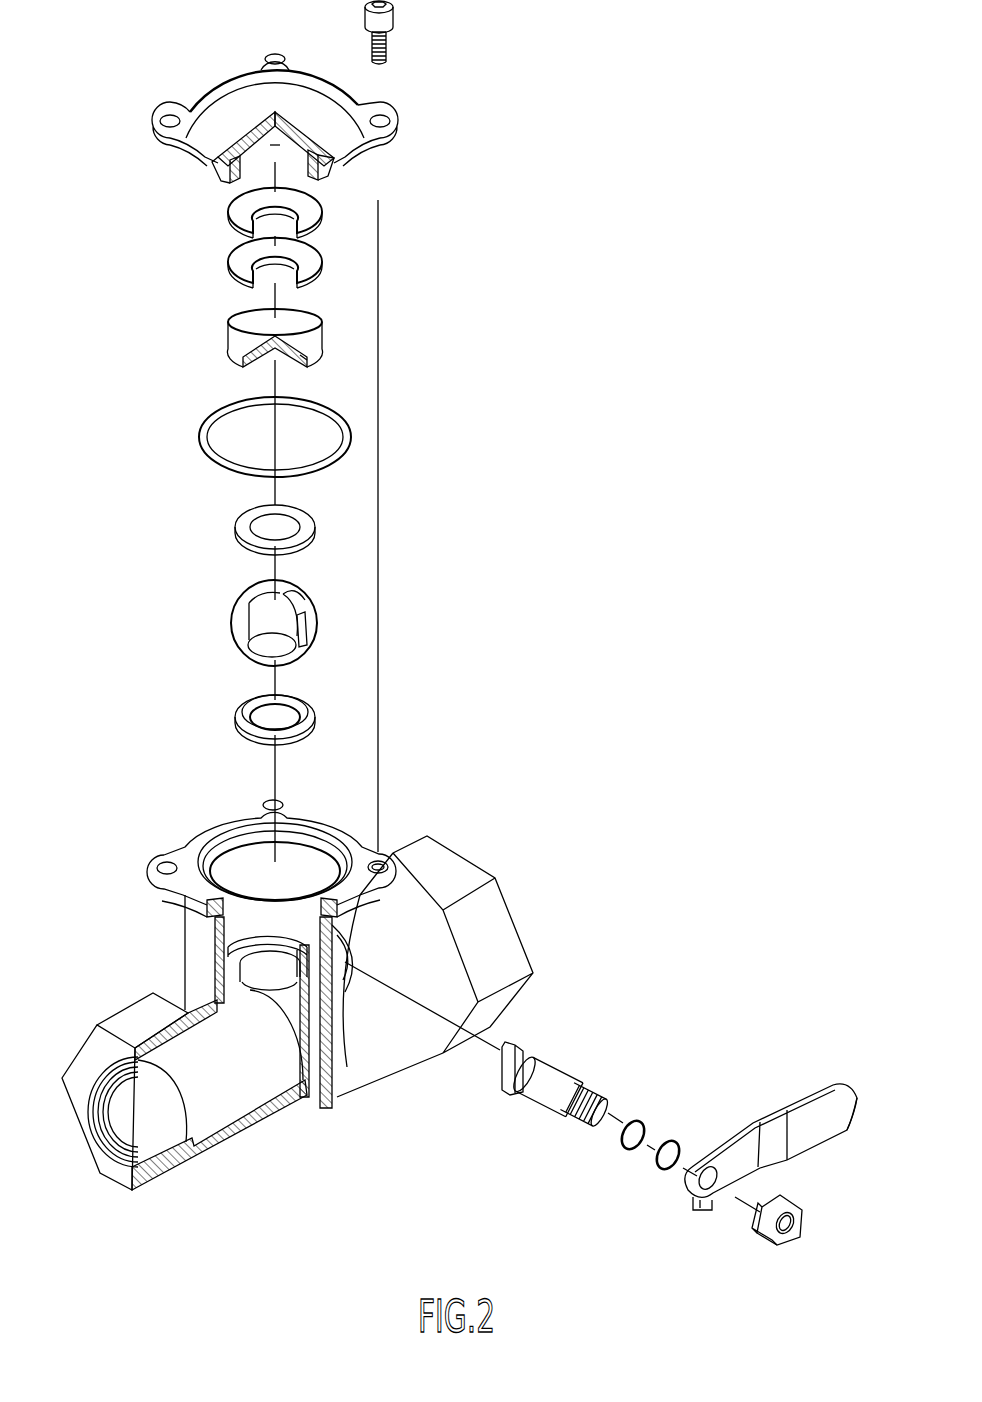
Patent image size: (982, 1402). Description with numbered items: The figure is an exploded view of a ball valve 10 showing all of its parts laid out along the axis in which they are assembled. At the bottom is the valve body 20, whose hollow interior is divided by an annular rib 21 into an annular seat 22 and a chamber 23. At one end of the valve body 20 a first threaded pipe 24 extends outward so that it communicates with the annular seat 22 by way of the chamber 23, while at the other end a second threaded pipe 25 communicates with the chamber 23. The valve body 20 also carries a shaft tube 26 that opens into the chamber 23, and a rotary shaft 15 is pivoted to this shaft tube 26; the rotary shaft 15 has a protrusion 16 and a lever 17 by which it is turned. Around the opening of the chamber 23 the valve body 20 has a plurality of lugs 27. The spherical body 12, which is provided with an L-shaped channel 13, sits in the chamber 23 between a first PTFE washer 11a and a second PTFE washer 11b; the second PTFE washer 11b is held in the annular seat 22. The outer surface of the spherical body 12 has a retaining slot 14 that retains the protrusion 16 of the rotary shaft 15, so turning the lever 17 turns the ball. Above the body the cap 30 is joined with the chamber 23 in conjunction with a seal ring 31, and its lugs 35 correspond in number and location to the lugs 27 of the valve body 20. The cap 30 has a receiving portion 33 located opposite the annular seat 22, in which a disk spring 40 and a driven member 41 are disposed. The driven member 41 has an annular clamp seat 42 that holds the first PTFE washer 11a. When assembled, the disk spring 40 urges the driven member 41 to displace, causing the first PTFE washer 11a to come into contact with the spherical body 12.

The ball valve 10 is at (438, 680).
The first PTFE washer 11a is at (237, 520).
The second PTFE washer 11b is at (240, 710).
The spherical body 12 is at (230, 625).
The L-shaped channel 13 is at (283, 607).
The retaining slot 14 is at (313, 637).
The rotary shaft 15 is at (555, 1073).
The protrusion 16 is at (520, 1043).
The lever 17 is at (772, 1128).
The valve body 20 is at (408, 1032).
The annular rib 21 is at (237, 943).
The annular seat 22 is at (255, 973).
The chamber 23 is at (315, 860).
The first threaded pipe 24 is at (133, 1172).
The second threaded pipe 25 is at (455, 866).
The shaft tube 26 is at (345, 965).
The lugs 27 is at (383, 858).
The cap 30 is at (229, 72).
The seal ring 31 is at (204, 428).
The receiving portion 33 is at (290, 143).
The lugs 35 is at (392, 117).
The disk spring 40 is at (243, 213).
The driven member 41 is at (247, 330).
The annular clamp seat 42 is at (303, 362).